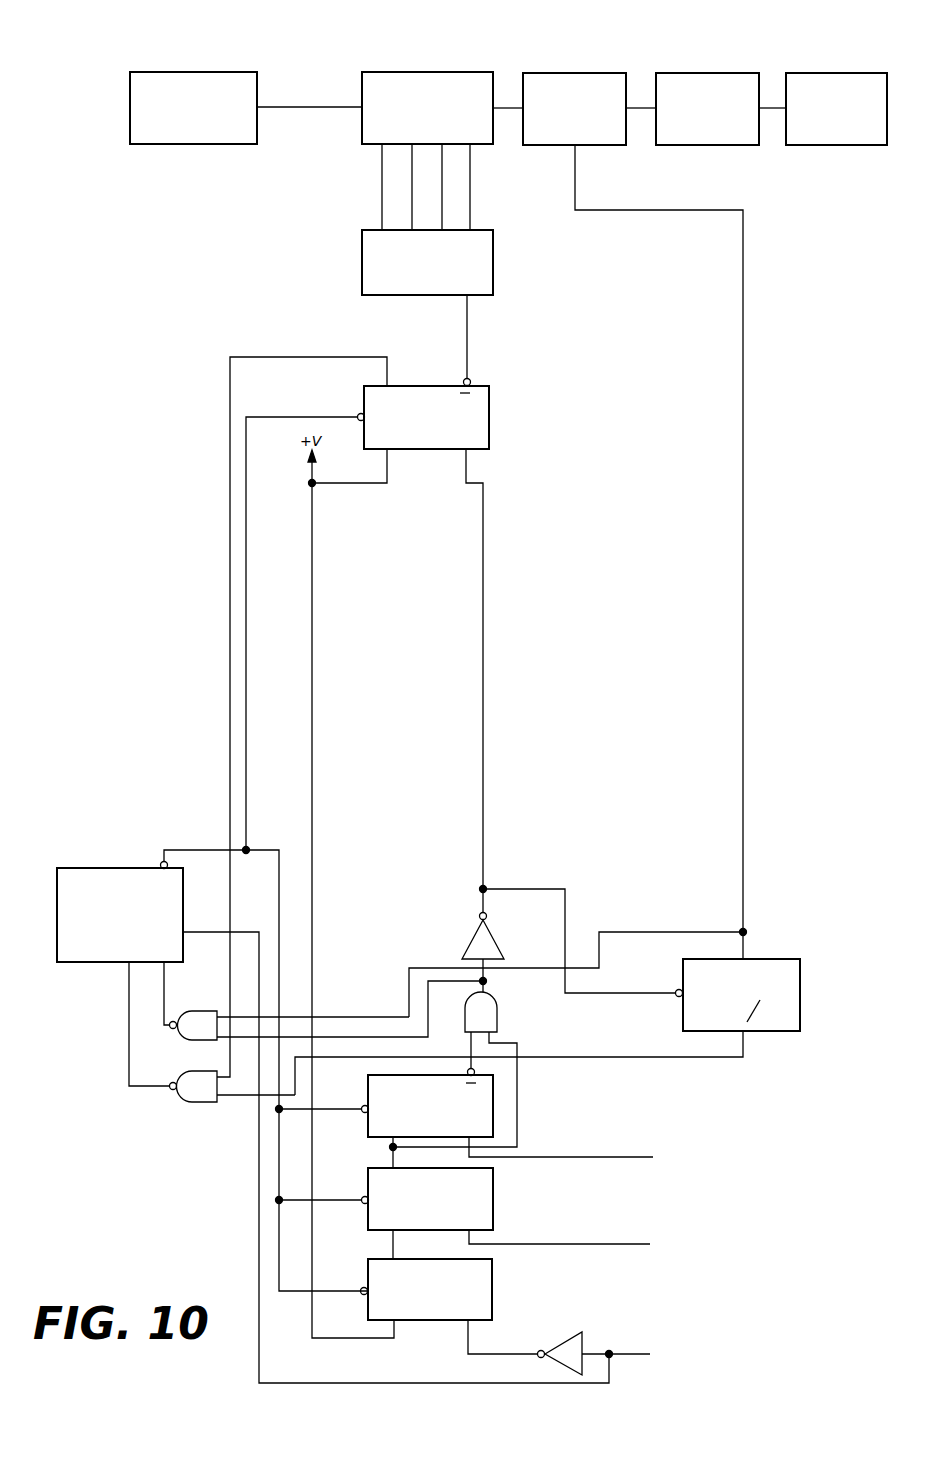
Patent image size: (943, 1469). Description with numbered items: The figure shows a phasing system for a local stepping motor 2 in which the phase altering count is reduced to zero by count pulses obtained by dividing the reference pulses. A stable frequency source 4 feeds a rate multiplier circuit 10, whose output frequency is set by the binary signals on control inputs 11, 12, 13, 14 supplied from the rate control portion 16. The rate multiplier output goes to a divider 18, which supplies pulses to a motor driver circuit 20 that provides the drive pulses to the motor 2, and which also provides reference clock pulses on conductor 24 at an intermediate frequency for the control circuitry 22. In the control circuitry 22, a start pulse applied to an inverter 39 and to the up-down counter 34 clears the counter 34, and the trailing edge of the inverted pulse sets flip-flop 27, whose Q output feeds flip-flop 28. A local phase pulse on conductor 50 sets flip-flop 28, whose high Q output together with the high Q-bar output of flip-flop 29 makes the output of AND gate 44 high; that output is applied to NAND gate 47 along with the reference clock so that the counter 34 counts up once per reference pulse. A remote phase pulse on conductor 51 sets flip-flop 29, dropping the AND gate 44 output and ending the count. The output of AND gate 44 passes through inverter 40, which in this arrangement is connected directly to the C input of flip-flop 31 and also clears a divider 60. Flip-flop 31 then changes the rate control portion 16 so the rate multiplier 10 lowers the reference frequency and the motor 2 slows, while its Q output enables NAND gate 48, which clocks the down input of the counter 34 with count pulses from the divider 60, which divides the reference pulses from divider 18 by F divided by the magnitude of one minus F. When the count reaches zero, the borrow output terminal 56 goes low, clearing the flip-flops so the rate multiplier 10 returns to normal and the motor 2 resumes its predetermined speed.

The stepping motor 2 is at (835, 72).
The frequency source 4 is at (203, 72).
The rate multiplier circuit 10 is at (431, 72).
The control input 11 is at (381, 172).
The control input 12 is at (413, 188).
The control input 13 is at (444, 186).
The control input 14 is at (472, 180).
The rate control portion 16 is at (494, 257).
The divider 18 is at (574, 73).
The motor driver circuit 20 is at (708, 73).
The control circuitry 22 is at (466, 380).
The conductor 24 is at (745, 319).
The flip-flop 27 is at (495, 1290).
The flip-flop 28 is at (495, 1195).
The flip-flop 29 is at (366, 1086).
The flip-flop 31 is at (510, 366).
The up-down counter 34 is at (99, 868).
The inverter 39 is at (565, 1333).
The inverter 40 is at (496, 935).
The AND gate 44 is at (498, 1012).
The NAND gate 47 is at (190, 1011).
The NAND gate 48 is at (191, 1103).
The conductor 50 is at (617, 1243).
The conductor 51 is at (625, 1156).
The borrow output terminal 56 is at (184, 850).
The divider 60 is at (788, 959).